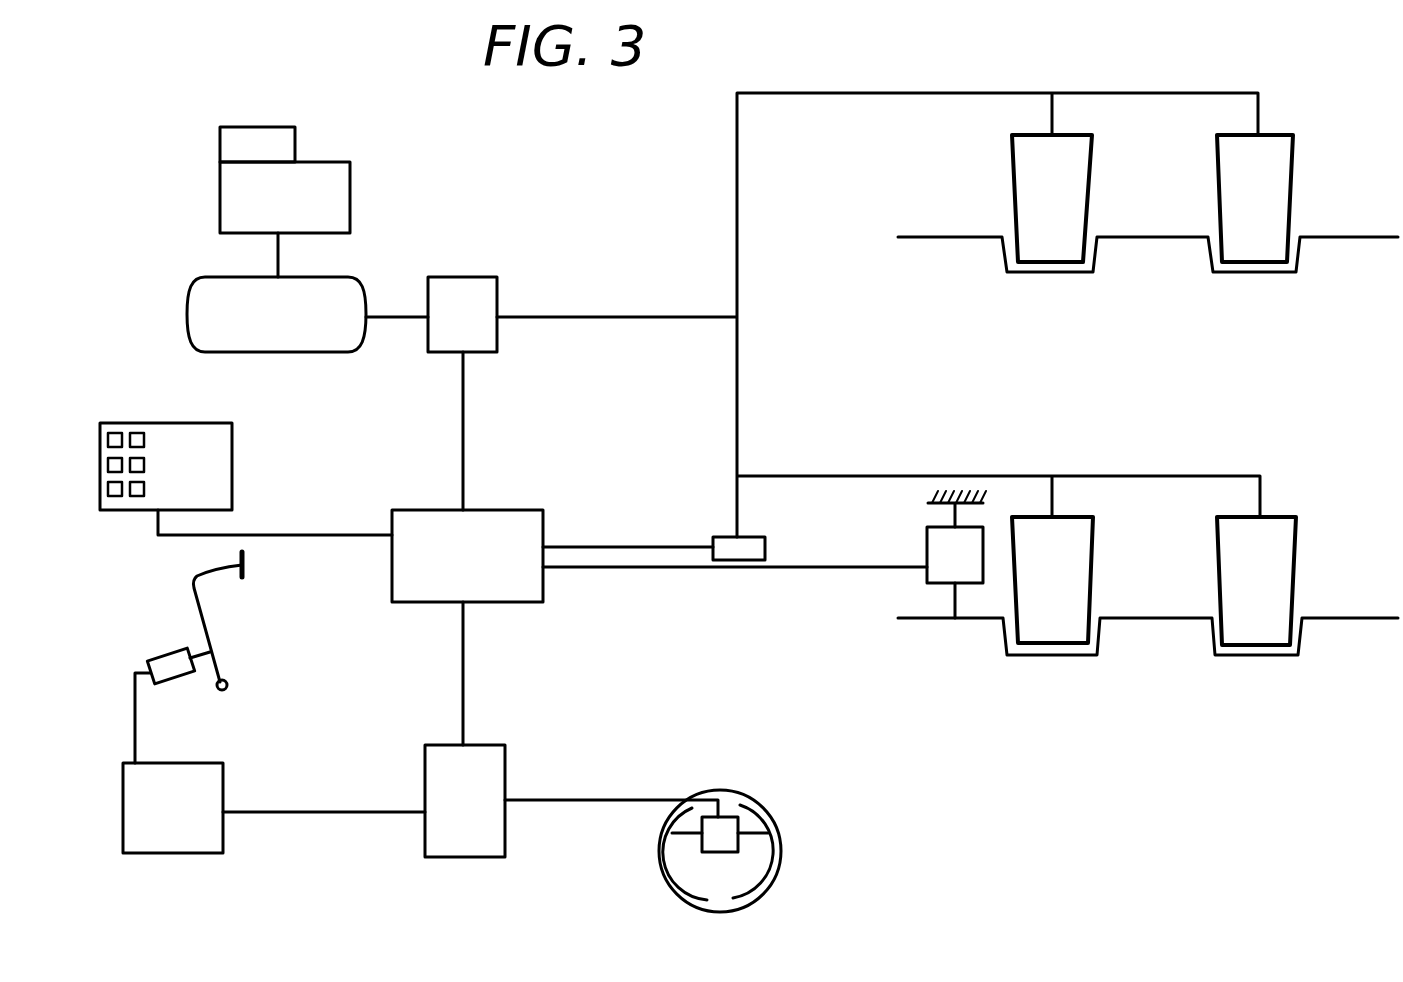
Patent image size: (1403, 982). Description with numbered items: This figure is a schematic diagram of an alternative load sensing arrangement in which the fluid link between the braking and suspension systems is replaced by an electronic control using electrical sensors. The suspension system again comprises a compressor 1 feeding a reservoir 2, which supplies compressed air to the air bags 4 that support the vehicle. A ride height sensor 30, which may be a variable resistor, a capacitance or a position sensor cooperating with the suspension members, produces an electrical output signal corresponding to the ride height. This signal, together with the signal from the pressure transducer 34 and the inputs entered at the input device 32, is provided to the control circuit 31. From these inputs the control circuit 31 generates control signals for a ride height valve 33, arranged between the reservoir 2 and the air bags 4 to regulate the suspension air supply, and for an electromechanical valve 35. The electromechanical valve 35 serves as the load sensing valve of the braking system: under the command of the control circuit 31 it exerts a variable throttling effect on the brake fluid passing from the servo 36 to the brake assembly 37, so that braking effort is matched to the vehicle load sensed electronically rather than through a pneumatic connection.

The compressor 1 is at (360, 163).
The reservoir 2 is at (363, 280).
The ride height valve 33 is at (478, 277).
The input device 32 is at (232, 450).
The control circuit 31 is at (490, 510).
The pressure transducer 34 is at (713, 537).
The ride height sensor 30 is at (925, 584).
The air bag 4 is at (1060, 218).
The servo 36 is at (223, 763).
The electromechanical valve 35 is at (505, 745).
The brake assembly 37 is at (730, 788).